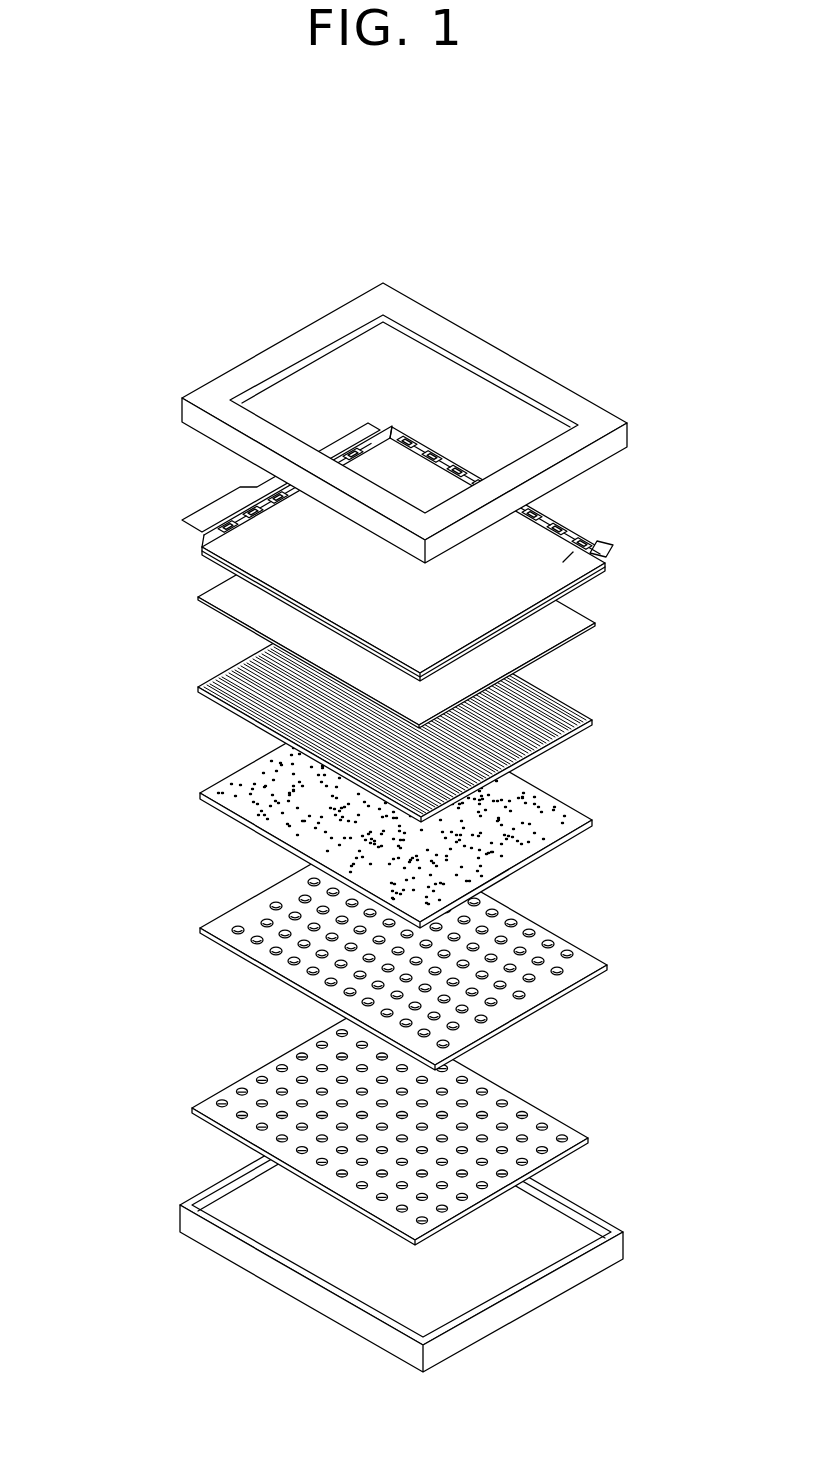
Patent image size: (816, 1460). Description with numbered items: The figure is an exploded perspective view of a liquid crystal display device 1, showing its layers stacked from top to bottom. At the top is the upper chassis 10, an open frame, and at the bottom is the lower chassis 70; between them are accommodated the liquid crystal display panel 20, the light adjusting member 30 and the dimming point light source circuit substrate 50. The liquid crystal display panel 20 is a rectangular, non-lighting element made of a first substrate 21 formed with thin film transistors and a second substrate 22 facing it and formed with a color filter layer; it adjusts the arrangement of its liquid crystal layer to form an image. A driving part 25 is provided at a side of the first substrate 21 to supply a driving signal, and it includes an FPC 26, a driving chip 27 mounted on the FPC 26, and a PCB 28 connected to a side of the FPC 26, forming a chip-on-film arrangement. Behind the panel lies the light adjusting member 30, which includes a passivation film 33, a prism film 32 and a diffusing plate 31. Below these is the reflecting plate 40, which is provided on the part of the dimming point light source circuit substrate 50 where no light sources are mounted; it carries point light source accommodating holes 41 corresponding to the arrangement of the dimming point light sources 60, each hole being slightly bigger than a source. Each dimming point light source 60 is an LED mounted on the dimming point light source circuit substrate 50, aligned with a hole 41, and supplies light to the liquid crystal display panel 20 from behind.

The liquid crystal display device 1 is at (388, 812).
The upper chassis 10 is at (630, 437).
The liquid crystal display panel 20 is at (466, 554).
The first substrate 21 is at (600, 577).
The second substrate 22 is at (534, 492).
The driving part 25 is at (219, 498).
The FPC (flexible printed circuit) 26 is at (200, 546).
The driving chip 27 is at (203, 532).
The PCB (printed circuit board) 28 is at (213, 503).
The light adjusting member 30 is at (464, 711).
The diffusing plate 31 is at (594, 820).
The prism film 32 is at (594, 720).
The passivation film 33 is at (437, 611).
The reflecting plate 40 is at (439, 949).
The point light source accommodating hole 41 is at (518, 925).
The dimming point light source circuit substrate 50 is at (435, 1126).
The dimming point light source 60 is at (542, 1128).
The lower chassis 70 is at (627, 1240).